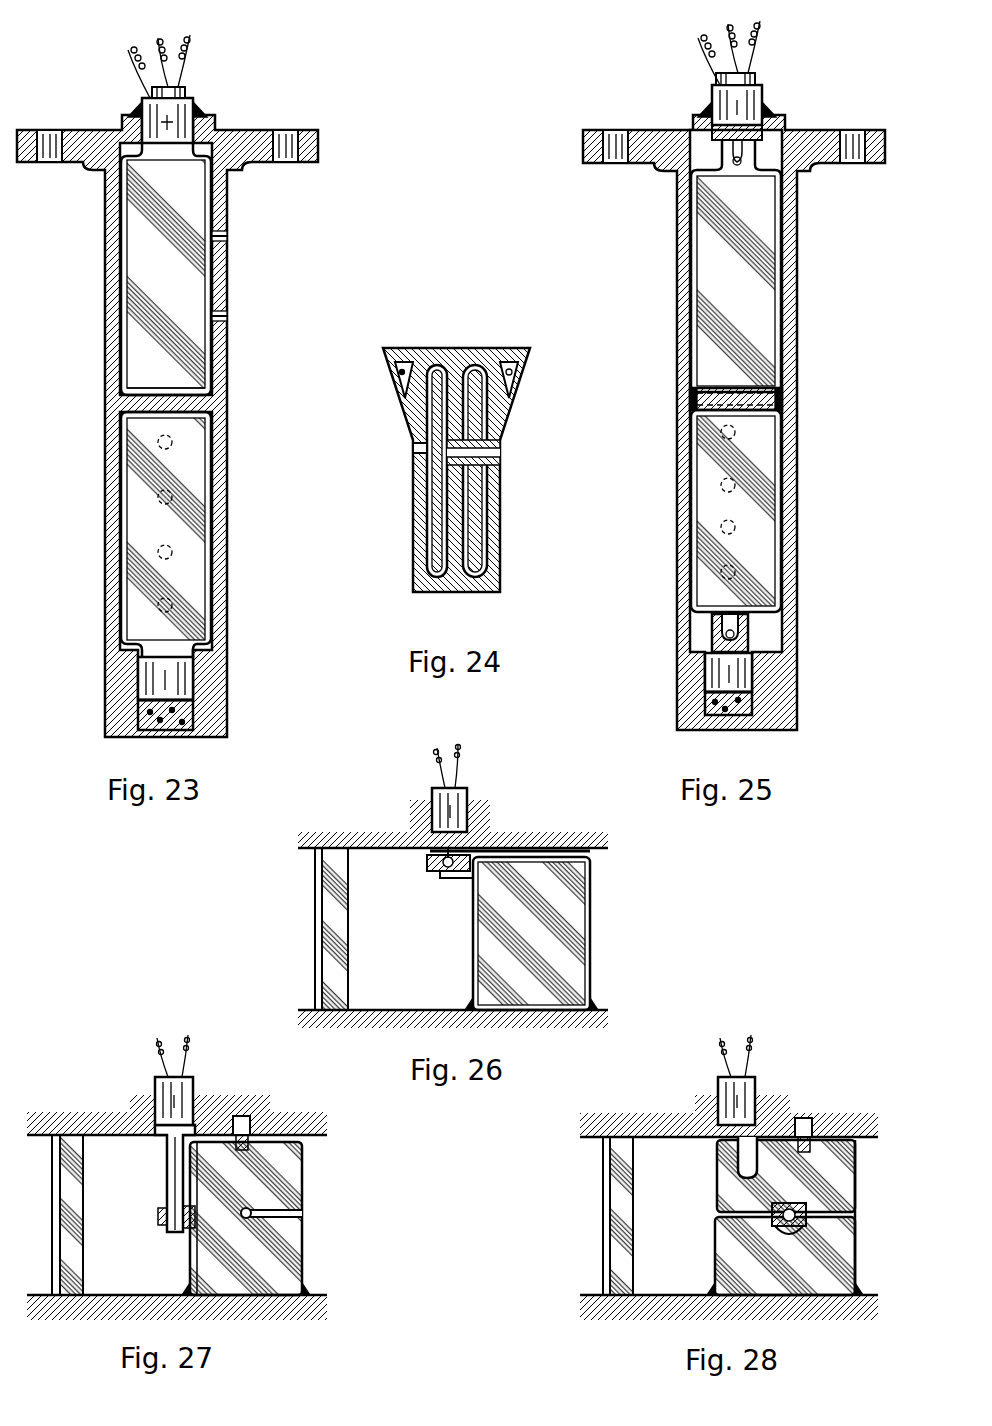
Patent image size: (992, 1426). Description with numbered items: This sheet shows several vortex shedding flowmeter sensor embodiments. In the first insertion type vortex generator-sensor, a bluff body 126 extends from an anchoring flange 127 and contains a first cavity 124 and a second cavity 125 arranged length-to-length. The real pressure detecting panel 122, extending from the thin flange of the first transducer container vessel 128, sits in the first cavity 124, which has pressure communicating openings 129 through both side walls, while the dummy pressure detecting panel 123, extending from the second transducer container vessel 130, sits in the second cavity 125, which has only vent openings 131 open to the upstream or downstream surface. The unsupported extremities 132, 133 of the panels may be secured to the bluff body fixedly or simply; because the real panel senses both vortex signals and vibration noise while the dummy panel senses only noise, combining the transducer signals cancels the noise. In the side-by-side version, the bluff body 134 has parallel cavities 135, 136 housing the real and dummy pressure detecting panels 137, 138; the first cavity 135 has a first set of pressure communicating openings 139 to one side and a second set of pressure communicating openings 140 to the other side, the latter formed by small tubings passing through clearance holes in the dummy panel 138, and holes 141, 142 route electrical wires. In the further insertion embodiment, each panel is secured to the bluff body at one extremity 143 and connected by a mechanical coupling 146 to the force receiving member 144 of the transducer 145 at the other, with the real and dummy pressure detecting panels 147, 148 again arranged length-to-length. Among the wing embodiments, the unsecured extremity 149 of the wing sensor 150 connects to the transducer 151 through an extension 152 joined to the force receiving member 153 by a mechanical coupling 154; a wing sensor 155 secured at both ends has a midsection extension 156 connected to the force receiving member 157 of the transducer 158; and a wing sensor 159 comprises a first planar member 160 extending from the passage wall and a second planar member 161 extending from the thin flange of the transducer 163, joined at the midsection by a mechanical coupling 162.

In FIG. 23, the real pressure detecting panel 122 is at (160, 577).
In FIG. 23, the dummy pressure detecting panel 123 is at (162, 283).
In FIG. 23, the first cavity 124 is at (185, 527).
In FIG. 23, the second cavity 125 is at (140, 230).
In FIG. 23, the bluff body 126 is at (112, 360).
In FIG. 23, the anchoring flange 127 is at (253, 130).
In FIG. 23, the first transducer container vessel 128 is at (166, 680).
In FIG. 23, the pressure communicating openings 129 is at (156, 545).
In FIG. 23, the second transducer container vessel 130 is at (163, 122).
In FIG. 23, the vent openings 131 is at (230, 317).
In FIG. 23, the unsupported extremity of real pressure detecting panel 132 is at (170, 432).
In FIG. 23, the unsupported extremity of dummy pressure detecting panel 133 is at (170, 378).
In FIG. 24, the bluff body 134 is at (520, 388).
In FIG. 24, the first cavity 135 is at (430, 537).
In FIG. 24, the second cavity 136 is at (487, 535).
In FIG. 24, the real pressure detecting panel 137 is at (428, 410).
In FIG. 24, the dummy pressure detecting panel 138 is at (483, 416).
In FIG. 24, the first set of pressure communicating openings 139 is at (415, 450).
In FIG. 24, the second set of pressure communicating openings 140 is at (500, 455).
In FIG. 24, the hole 141 is at (405, 358).
In FIG. 24, the hole 142 is at (503, 358).
In FIG. 25, the extremity 143 is at (728, 420).
In FIG. 25, the force receiving member 144 is at (747, 627).
In FIG. 25, the transducer 145 is at (725, 675).
In FIG. 25, the mechanical coupling 146 is at (727, 610).
In FIG. 25, the real pressure detecting panel 147 is at (728, 506).
In FIG. 25, the dummy pressure detecting panel 148 is at (742, 293).
In FIG. 26, the unsecured extremity 149 is at (540, 862).
In FIG. 26, the wing sensor 150 is at (540, 925).
In FIG. 26, the transducer 151 is at (455, 818).
In FIG. 26, the extension 152 is at (440, 856).
In FIG. 26, the force receiving member 153 is at (447, 862).
In FIG. 26, the mechanical coupling 154 is at (450, 866).
In FIG. 27, the wing sensor 155 is at (255, 1247).
In FIG. 27, the extension 156 is at (160, 1212).
In FIG. 27, the force receiving member 157 is at (167, 1170).
In FIG. 27, the transducer 158 is at (168, 1098).
In FIG. 28, the wing sensor 159 is at (862, 1210).
In FIG. 28, the first planar member 160 is at (742, 1258).
In FIG. 28, the second planar member 161 is at (733, 1172).
In FIG. 28, the mechanical coupling 162 is at (788, 1200).
In FIG. 28, the transducer 163 is at (735, 1095).